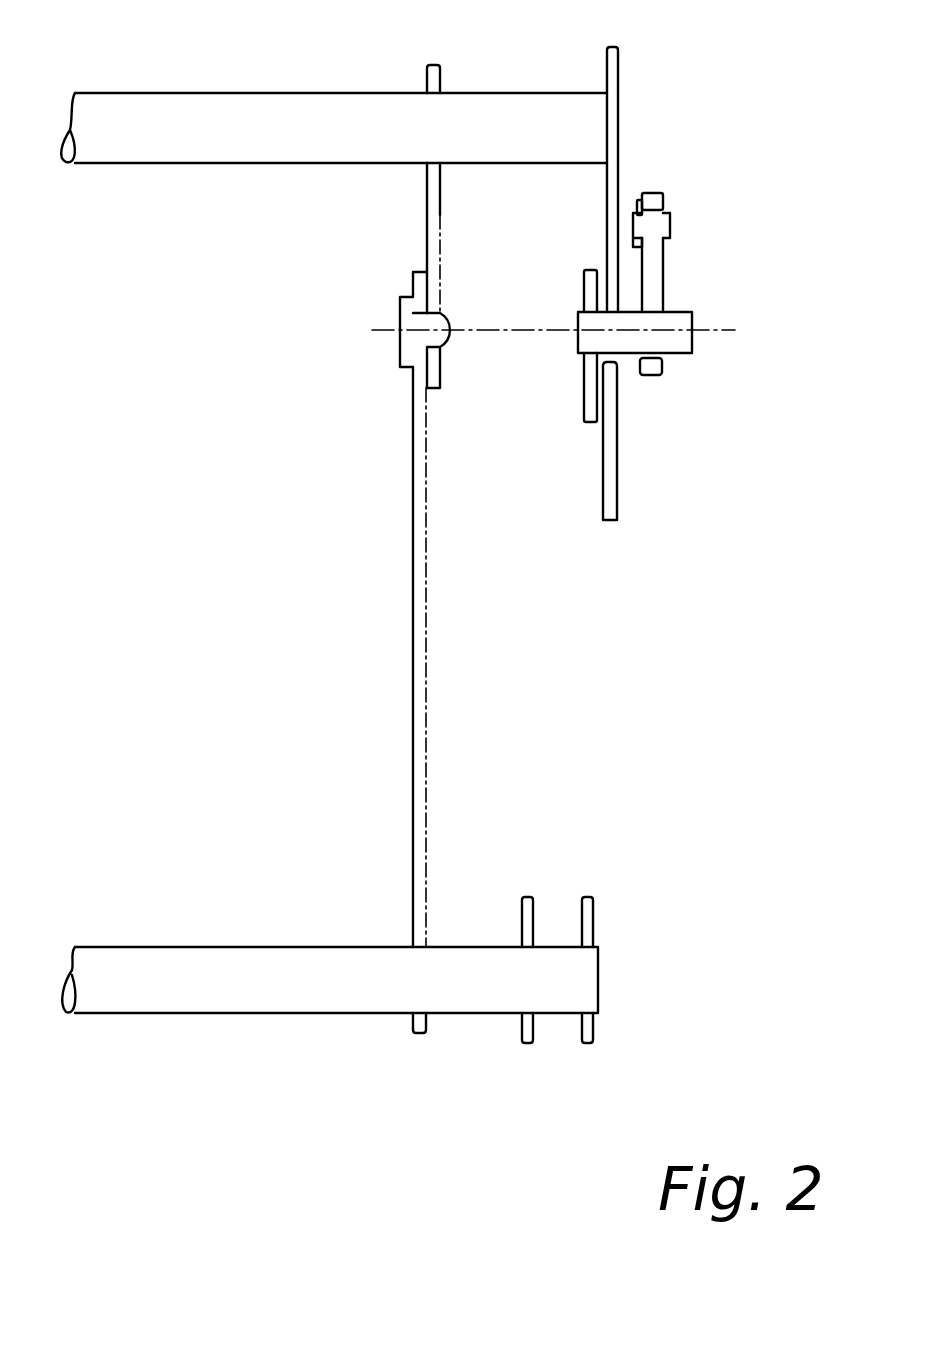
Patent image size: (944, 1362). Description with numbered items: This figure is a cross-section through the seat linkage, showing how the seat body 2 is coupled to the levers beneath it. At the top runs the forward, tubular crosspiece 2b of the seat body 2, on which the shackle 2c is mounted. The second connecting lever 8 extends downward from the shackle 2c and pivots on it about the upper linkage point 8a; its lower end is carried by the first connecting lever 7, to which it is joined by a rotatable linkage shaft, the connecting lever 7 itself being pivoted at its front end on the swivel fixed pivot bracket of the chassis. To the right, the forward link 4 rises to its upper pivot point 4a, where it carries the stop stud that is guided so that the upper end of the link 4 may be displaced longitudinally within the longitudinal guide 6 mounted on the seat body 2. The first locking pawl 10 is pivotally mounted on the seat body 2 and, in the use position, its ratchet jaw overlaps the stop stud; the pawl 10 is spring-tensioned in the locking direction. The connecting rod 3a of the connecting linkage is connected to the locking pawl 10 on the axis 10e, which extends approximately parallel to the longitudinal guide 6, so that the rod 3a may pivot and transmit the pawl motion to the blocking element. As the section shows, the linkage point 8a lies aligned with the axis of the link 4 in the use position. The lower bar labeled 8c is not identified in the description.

The seat body 2 is at (618, 67).
The forward tubular crosspiece 2b is at (222, 93).
The shackle 2c is at (445, 232).
The connecting rod 3a is at (636, 207).
The forward link 4 is at (583, 393).
The upper pivot point 4a is at (692, 327).
The longitudinal guide 6 is at (617, 365).
The connecting lever 7 is at (582, 908).
The second connecting lever 8 is at (427, 793).
The upper linkage point 8a is at (405, 338).
The lower bar 8c is at (185, 947).
The first locking pawl 10 is at (663, 277).
The axis 10e is at (670, 225).